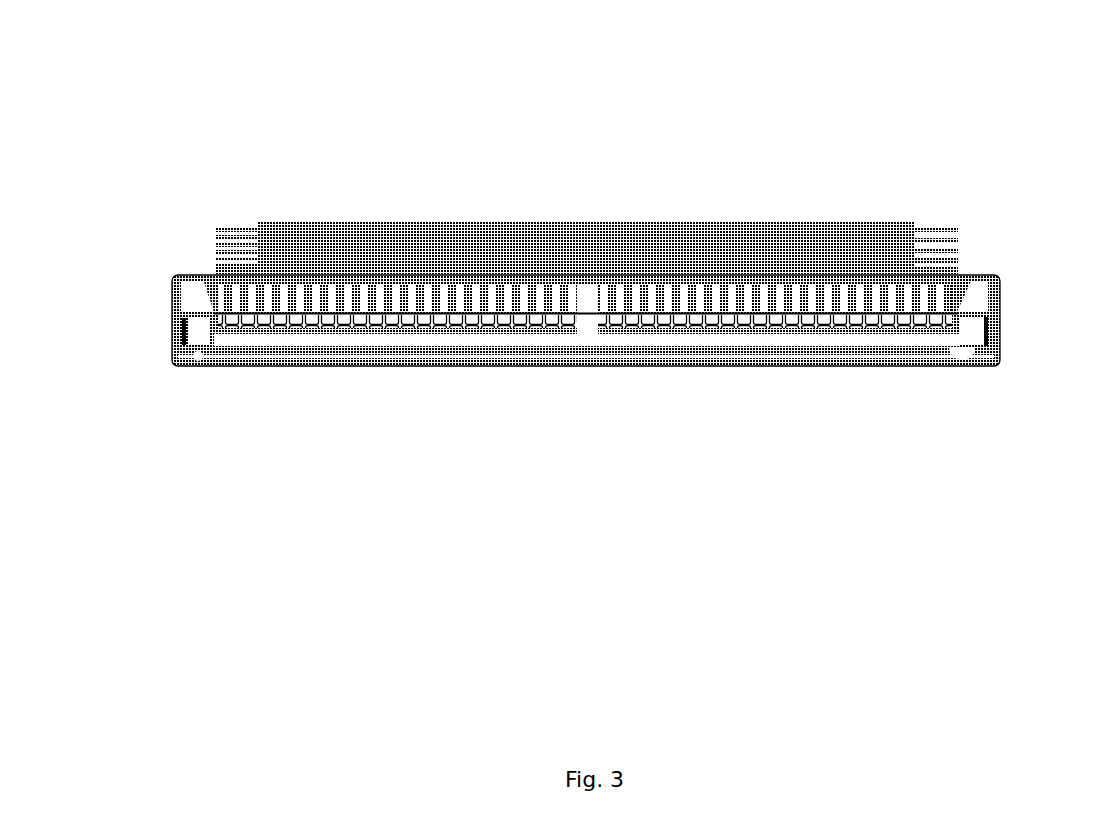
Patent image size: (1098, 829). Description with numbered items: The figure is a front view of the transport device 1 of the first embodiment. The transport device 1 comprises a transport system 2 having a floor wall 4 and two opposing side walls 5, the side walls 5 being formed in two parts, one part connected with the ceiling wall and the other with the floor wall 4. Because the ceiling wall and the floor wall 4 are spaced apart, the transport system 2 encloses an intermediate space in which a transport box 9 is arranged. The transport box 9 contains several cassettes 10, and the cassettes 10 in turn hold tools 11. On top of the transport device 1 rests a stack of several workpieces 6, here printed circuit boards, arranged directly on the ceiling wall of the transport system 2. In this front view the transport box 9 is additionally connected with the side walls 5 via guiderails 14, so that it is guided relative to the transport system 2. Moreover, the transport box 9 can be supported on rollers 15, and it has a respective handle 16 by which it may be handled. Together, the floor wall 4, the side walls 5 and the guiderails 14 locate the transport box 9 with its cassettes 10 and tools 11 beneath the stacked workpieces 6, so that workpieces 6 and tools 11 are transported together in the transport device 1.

The transport device 1 is at (350, 82).
The transport system 2 is at (282, 152).
The floor wall 4 is at (567, 360).
The side walls 5 is at (998, 330).
The workpiece 6 is at (438, 236).
The transport box 9 is at (633, 340).
The cassettes 10 is at (913, 327).
The tools 11 is at (942, 300).
The guiderails 14 is at (183, 330).
The rollers 15 is at (208, 353).
The handle 16 is at (211, 308).